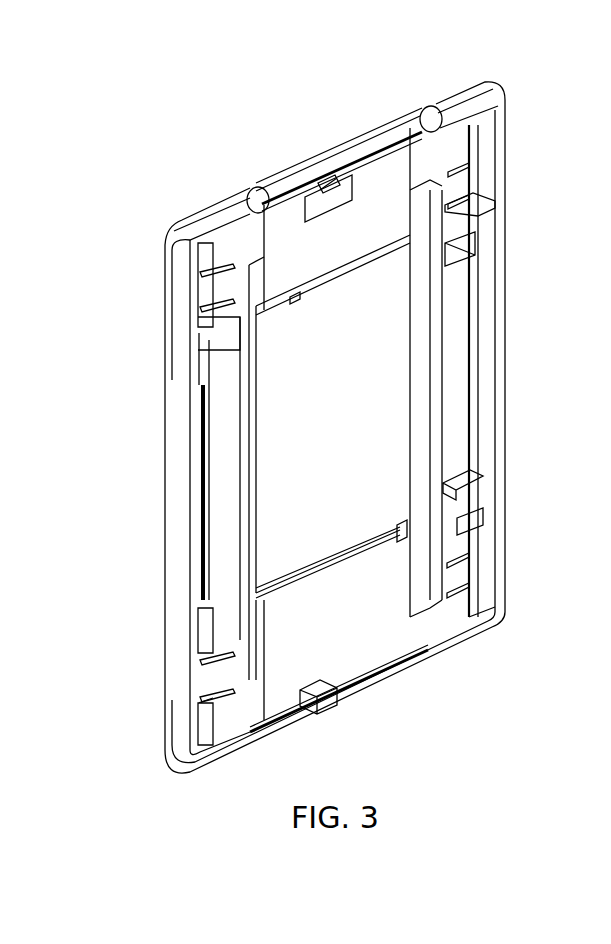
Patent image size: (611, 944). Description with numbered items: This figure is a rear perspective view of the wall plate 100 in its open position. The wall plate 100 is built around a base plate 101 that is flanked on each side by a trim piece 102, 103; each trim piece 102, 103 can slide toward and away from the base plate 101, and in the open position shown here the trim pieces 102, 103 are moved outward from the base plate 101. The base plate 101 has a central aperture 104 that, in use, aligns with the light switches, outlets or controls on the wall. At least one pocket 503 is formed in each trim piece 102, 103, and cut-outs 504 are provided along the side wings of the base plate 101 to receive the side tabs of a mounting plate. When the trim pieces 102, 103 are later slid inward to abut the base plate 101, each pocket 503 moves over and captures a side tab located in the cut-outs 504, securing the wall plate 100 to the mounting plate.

The wall plate 100 is at (243, 142).
The base plate 101 is at (328, 152).
The trim piece 102 is at (450, 99).
The trim piece 103 is at (212, 207).
The central aperture 104 is at (349, 432).
The pocket 503 is at (465, 235).
The cut-outs 504 is at (447, 232).